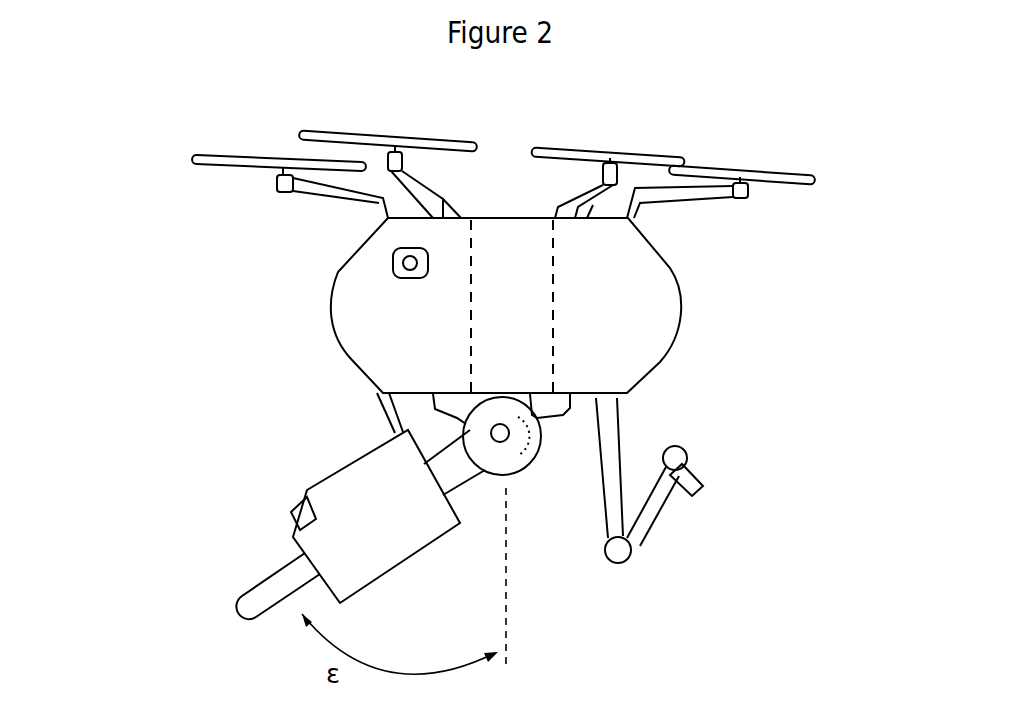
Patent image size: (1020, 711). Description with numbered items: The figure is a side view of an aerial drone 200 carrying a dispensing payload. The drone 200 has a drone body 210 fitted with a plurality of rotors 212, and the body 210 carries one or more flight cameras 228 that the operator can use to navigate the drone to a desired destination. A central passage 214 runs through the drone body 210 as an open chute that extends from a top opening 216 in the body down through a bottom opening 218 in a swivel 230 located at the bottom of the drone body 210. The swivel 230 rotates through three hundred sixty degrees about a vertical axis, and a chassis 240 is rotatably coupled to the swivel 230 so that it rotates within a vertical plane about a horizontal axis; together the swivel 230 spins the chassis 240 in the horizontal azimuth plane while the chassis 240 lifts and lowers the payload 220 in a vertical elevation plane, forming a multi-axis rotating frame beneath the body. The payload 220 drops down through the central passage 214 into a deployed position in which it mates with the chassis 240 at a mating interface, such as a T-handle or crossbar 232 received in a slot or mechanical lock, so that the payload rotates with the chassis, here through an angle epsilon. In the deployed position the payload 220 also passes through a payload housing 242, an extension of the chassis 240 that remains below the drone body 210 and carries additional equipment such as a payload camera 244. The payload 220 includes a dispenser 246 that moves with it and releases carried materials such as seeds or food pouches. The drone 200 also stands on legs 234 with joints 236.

The aerial drone 200 is at (160, 185).
The drone body 210 is at (673, 272).
The rotors 212 is at (785, 188).
The central passage 214 is at (510, 255).
The top opening 216 is at (543, 218).
The bottom opening 218 is at (455, 426).
The payload 220 is at (266, 526).
The flight cameras 228 is at (393, 267).
The swivel 230 is at (557, 405).
The T-handle or crossbar 232 is at (505, 440).
The legs 234 is at (647, 517).
The joints 236 is at (620, 564).
The chassis 240 is at (541, 440).
The payload housing 242 is at (357, 582).
The payload camera 244 is at (305, 500).
The dispenser 246 is at (276, 578).